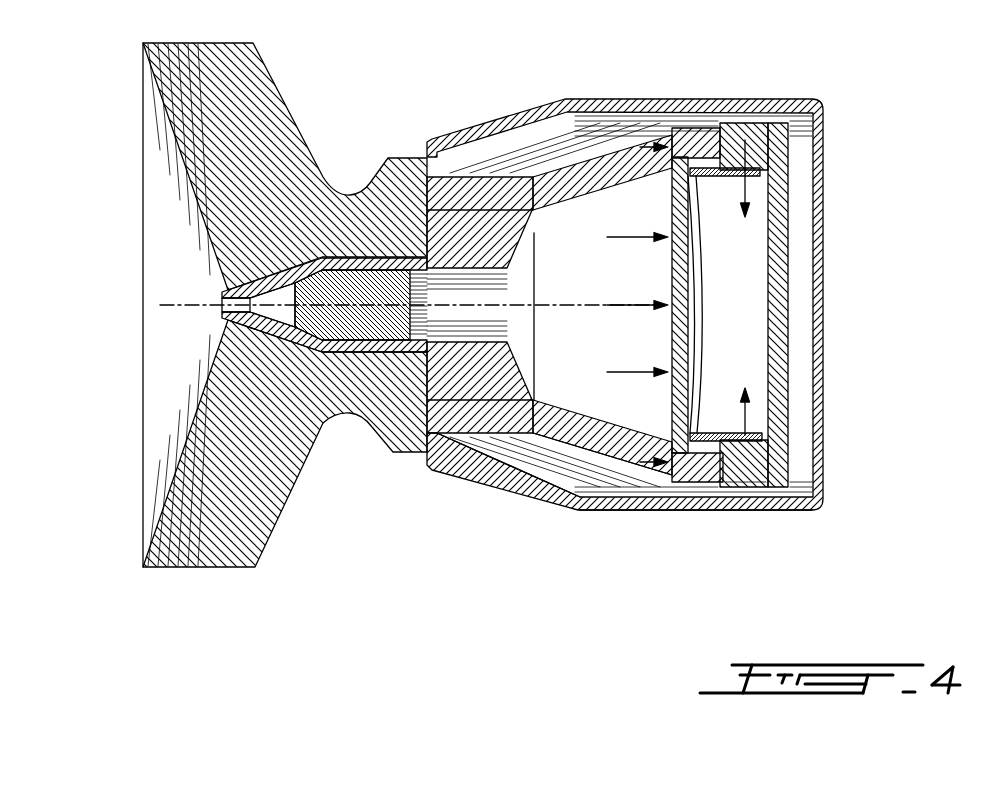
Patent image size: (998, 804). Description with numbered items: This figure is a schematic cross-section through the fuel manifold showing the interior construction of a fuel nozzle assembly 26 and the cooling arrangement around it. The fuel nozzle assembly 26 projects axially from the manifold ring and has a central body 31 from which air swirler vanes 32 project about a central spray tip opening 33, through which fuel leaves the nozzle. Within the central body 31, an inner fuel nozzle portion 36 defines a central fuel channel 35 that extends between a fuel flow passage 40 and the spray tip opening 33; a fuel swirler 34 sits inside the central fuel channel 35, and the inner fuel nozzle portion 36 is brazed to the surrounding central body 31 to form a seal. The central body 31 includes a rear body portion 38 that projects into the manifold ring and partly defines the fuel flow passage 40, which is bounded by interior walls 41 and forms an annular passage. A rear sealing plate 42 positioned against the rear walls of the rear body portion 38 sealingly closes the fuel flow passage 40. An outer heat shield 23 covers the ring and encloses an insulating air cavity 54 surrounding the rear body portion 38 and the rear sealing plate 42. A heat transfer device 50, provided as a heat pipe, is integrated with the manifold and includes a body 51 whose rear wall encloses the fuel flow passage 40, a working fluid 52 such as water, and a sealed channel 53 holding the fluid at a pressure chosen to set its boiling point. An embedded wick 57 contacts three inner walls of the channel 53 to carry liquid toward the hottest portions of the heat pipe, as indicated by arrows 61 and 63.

The outer heat shield 23 is at (750, 470).
The fuel nozzle assembly 26 is at (186, 157).
The central body 31 is at (390, 468).
The air swirler vanes 32 is at (206, 476).
The central spray tip opening 33 is at (216, 282).
The fuel swirler 34 is at (238, 330).
The central fuel channel 35 is at (492, 330).
The inner fuel nozzle portion 36 is at (522, 240).
The rear body portion 38 is at (592, 450).
The fuel flow passage 40 is at (577, 354).
The interior walls 41 is at (572, 417).
The rear sealing plate 42 is at (778, 418).
The heat transfer device 50 is at (812, 292).
The heat pipe body 51 is at (752, 160).
The working fluid 52 is at (764, 266).
The channel 53 is at (765, 176).
The insulating air cavity 54 is at (552, 469).
The embedded wick 57 is at (714, 323).
The arrows 61 is at (640, 147).
The arrows 63 is at (607, 238).